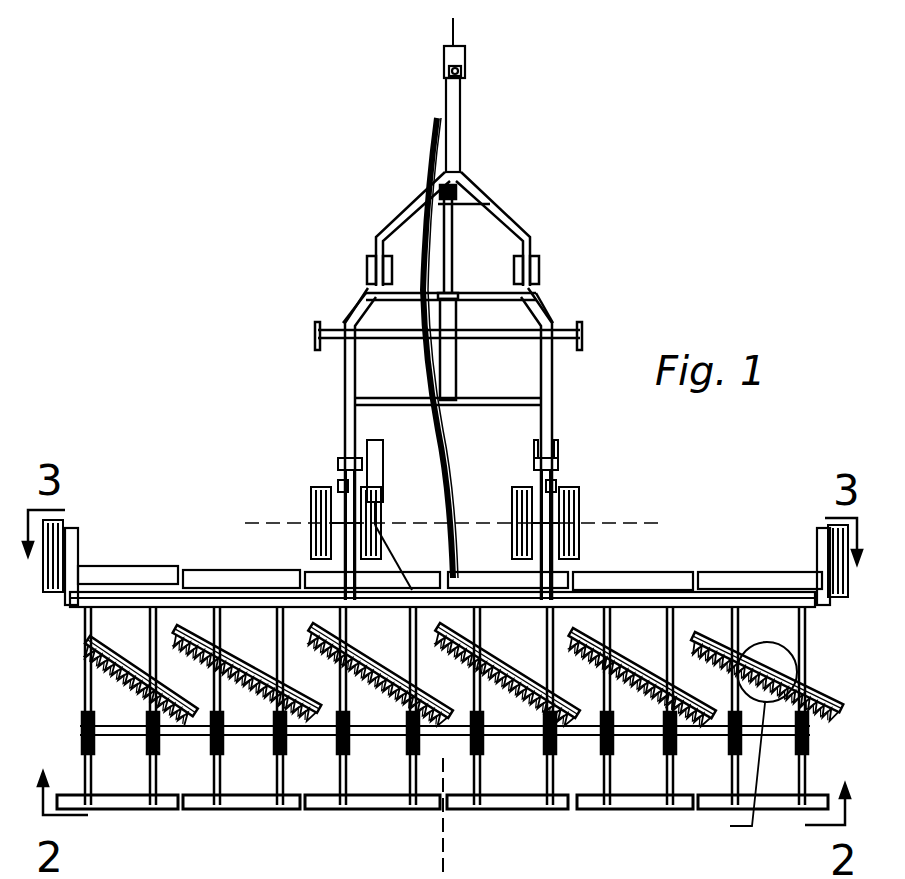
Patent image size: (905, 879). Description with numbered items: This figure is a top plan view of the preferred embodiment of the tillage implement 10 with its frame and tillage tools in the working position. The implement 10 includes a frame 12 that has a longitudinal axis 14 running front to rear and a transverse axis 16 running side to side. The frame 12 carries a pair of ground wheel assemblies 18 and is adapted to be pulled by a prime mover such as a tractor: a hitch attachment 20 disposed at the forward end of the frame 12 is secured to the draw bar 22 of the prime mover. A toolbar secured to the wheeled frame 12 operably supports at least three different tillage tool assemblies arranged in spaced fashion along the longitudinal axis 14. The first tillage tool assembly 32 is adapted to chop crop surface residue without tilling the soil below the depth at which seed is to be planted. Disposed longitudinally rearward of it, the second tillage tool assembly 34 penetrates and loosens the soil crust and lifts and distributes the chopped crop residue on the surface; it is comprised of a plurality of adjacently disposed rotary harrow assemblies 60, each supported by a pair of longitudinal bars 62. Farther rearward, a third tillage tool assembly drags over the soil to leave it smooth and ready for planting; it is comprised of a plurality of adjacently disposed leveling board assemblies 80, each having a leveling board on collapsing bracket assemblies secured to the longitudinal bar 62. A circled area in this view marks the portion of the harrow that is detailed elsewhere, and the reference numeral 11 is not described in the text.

The tillage implement 10 is at (292, 258).
The hydraulic cylinder 11 is at (374, 440).
The frame 12 is at (556, 415).
The longitudinal axis 14 is at (457, 33).
The transverse axis 16 is at (274, 486).
The ground wheel assemblies 18 is at (580, 490).
The hitch attachment 20 is at (466, 84).
The draw bar 22 is at (444, 60).
The first tillage tool assembly 32 is at (145, 555).
The second tillage tool assembly 34 is at (75, 668).
The rotary harrow assemblies 60 is at (372, 718).
The longitudinal bars 62 is at (548, 702).
The leveling board assemblies 80 is at (372, 812).